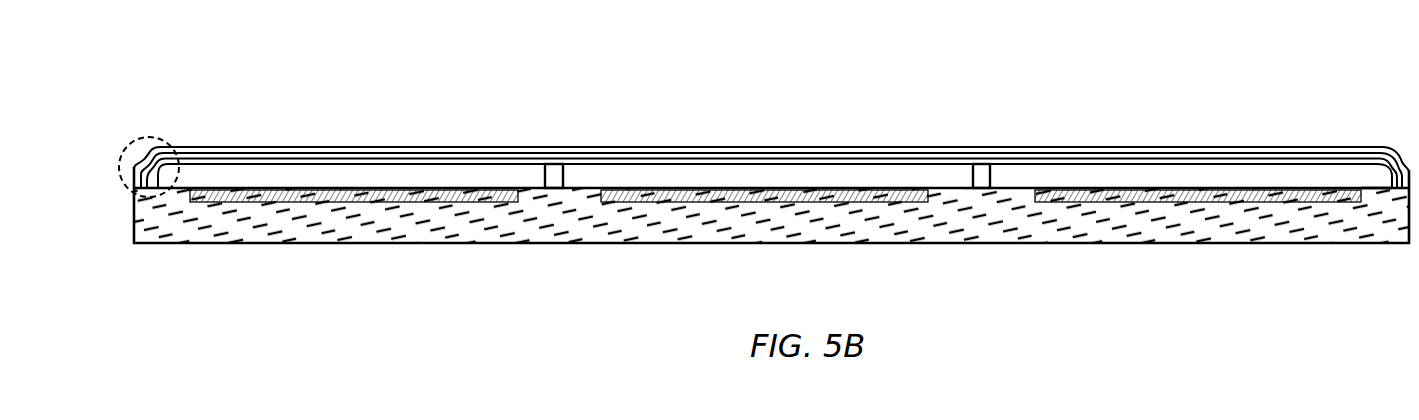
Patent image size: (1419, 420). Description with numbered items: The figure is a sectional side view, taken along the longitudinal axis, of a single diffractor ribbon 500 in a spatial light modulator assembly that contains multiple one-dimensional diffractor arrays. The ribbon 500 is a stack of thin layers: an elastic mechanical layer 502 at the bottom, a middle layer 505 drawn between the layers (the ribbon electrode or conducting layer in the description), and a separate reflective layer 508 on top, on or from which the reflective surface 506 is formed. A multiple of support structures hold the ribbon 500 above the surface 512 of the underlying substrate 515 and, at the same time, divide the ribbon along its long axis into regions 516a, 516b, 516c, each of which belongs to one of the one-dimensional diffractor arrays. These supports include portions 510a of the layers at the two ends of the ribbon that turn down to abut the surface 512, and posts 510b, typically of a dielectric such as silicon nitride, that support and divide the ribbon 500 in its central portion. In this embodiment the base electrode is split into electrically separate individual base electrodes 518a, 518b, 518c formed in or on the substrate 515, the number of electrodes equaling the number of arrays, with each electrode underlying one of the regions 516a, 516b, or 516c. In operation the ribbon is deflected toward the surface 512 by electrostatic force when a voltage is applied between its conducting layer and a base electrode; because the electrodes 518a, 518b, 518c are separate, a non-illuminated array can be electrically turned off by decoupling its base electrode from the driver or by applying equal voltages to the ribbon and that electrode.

The ribbon 500 is at (192, 40).
The elastic mechanical layer 502 is at (893, 157).
The intermediate layer 505 is at (1237, 155).
The reflective surface 506 is at (501, 145).
The reflective layer 508 is at (1297, 147).
The turned-down end portions 510a is at (143, 137).
The posts 510b is at (971, 178).
The surface of the substrate 512 is at (1363, 185).
The base substrate 515 is at (771, 205).
The first region 516a is at (318, 133).
The second region 516b is at (764, 133).
The third region 516c is at (1198, 131).
The first individual base electrode 518a is at (354, 149).
The second individual base electrode 518b is at (764, 148).
The third individual base electrode 518c is at (1167, 190).